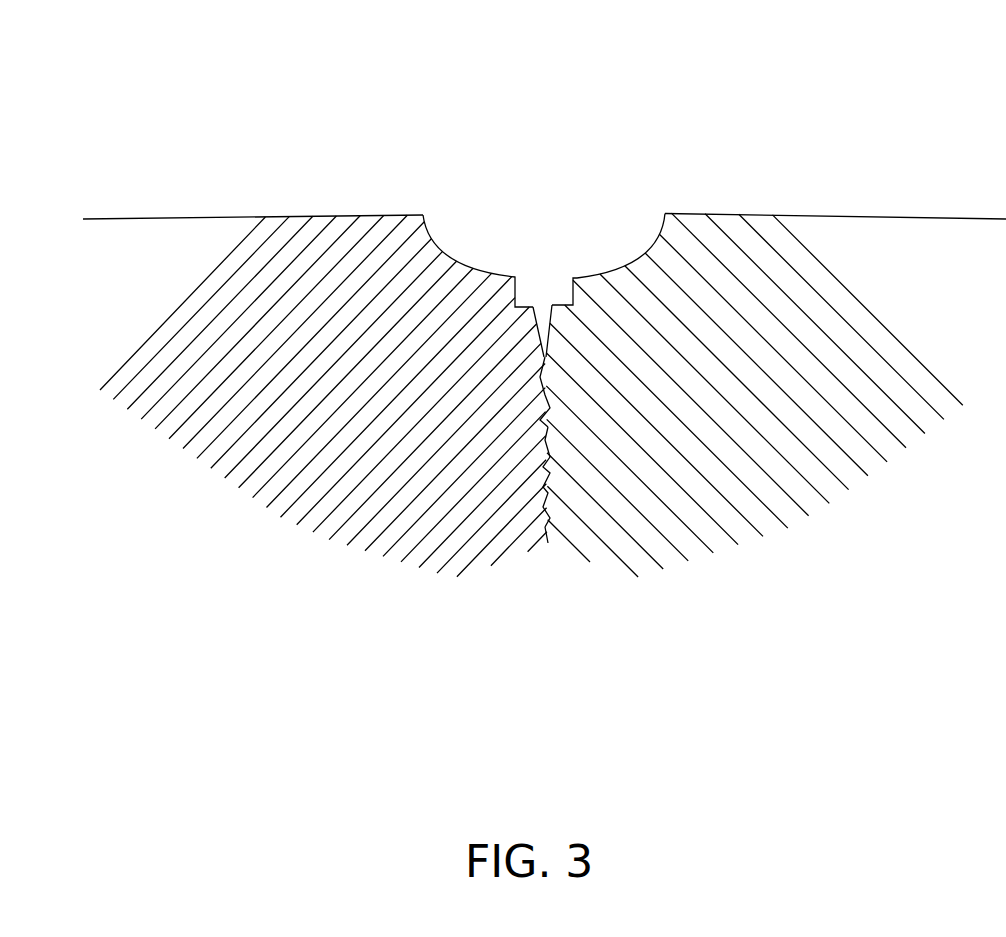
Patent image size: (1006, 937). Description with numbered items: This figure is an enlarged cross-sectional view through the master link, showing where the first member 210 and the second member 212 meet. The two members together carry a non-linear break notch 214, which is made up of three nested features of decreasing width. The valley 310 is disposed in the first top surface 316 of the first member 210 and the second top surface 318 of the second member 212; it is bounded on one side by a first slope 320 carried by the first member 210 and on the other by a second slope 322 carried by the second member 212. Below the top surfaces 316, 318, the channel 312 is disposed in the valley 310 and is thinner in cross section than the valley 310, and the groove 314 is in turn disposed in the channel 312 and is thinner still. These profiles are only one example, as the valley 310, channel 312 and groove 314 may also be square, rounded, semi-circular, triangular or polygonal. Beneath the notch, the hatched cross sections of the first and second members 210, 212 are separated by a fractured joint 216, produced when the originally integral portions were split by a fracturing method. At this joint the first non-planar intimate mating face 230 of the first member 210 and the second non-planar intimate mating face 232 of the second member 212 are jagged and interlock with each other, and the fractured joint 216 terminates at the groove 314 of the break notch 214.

The first member 210 is at (315, 356).
The second member 212 is at (776, 362).
The non-linear break notch 214 is at (567, 189).
The fractured joint 216 is at (546, 558).
The first non-planar intimate mating face 230 is at (545, 487).
The second non-planar intimate mating face 232 is at (560, 526).
The valley 310 is at (643, 228).
The channel 312 is at (563, 293).
The groove 314 is at (543, 300).
The first top surface 316 is at (307, 216).
The second top surface 318 is at (752, 215).
The first slope 320 is at (468, 213).
The second slope 322 is at (644, 189).